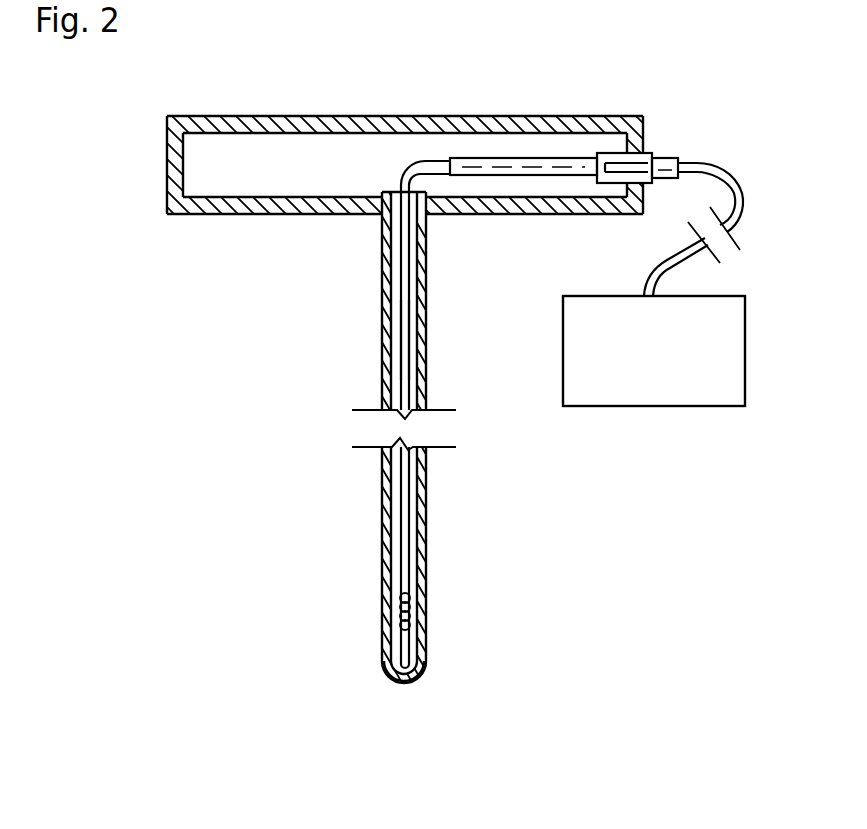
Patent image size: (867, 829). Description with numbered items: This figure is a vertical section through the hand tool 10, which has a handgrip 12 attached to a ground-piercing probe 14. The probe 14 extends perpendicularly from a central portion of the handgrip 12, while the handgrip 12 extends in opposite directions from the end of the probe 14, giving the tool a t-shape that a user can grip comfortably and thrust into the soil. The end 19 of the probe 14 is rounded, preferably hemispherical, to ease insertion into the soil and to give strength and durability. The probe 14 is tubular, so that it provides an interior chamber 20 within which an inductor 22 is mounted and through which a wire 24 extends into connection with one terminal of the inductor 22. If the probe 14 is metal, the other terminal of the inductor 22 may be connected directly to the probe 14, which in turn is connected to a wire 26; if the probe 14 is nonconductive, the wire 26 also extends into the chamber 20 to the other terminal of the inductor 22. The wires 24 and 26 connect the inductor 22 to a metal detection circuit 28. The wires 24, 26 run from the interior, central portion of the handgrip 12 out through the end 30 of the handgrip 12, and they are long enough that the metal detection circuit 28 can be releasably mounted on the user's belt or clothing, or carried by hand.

The hand tool 10 is at (233, 355).
The handgrip 12 is at (240, 210).
The ground-piercing probe 14 is at (428, 368).
The end of the probe 19 is at (400, 683).
The interior chamber 20 is at (400, 374).
The inductor 22 is at (390, 617).
The wire 24 is at (403, 265).
The wire 26 is at (430, 182).
The metal detection circuit 28 is at (563, 341).
The end of the handgrip 30 is at (637, 139).